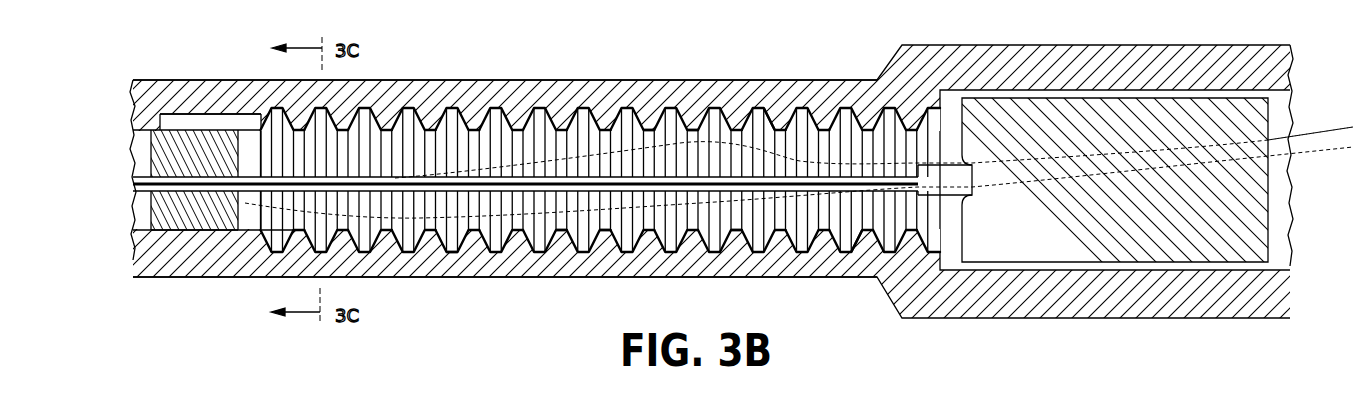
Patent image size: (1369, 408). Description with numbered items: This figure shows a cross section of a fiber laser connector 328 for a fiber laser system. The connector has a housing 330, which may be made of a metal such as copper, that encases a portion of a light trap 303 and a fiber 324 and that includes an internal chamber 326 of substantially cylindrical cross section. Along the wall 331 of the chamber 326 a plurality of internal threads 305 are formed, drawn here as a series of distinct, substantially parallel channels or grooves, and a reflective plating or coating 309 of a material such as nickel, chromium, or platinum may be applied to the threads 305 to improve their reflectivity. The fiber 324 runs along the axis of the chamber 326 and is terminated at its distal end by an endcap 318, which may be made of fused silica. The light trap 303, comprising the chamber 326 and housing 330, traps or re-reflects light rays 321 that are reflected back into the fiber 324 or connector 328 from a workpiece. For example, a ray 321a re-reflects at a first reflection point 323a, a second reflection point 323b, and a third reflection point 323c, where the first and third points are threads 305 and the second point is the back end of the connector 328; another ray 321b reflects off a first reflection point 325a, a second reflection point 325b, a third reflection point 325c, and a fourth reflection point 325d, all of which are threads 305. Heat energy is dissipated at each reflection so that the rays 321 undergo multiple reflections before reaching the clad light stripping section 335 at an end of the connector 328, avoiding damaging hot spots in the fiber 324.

The light trap 303 is at (592, 88).
The internal threads 305 is at (452, 254).
The reflective plating or coating 309 is at (453, 108).
The endcap 318 is at (1101, 209).
The light rays 321 is at (862, 254).
The ray 321a is at (1330, 150).
The ray 321b is at (1330, 130).
The first reflection point 323a is at (568, 228).
The second reflection point 323b is at (240, 200).
The third reflection point 323c is at (780, 116).
The fiber 324 is at (800, 162).
The first reflection point 325a is at (611, 232).
The second reflection point 325b is at (694, 112).
The third reflection point 325c is at (650, 128).
The fourth reflection point 325d is at (735, 242).
The chamber 326 is at (324, 163).
The fiber laser connector 328 is at (1079, 322).
The housing 330 is at (533, 80).
The wall 331 is at (397, 270).
The clad light stripping section 335 is at (199, 104).